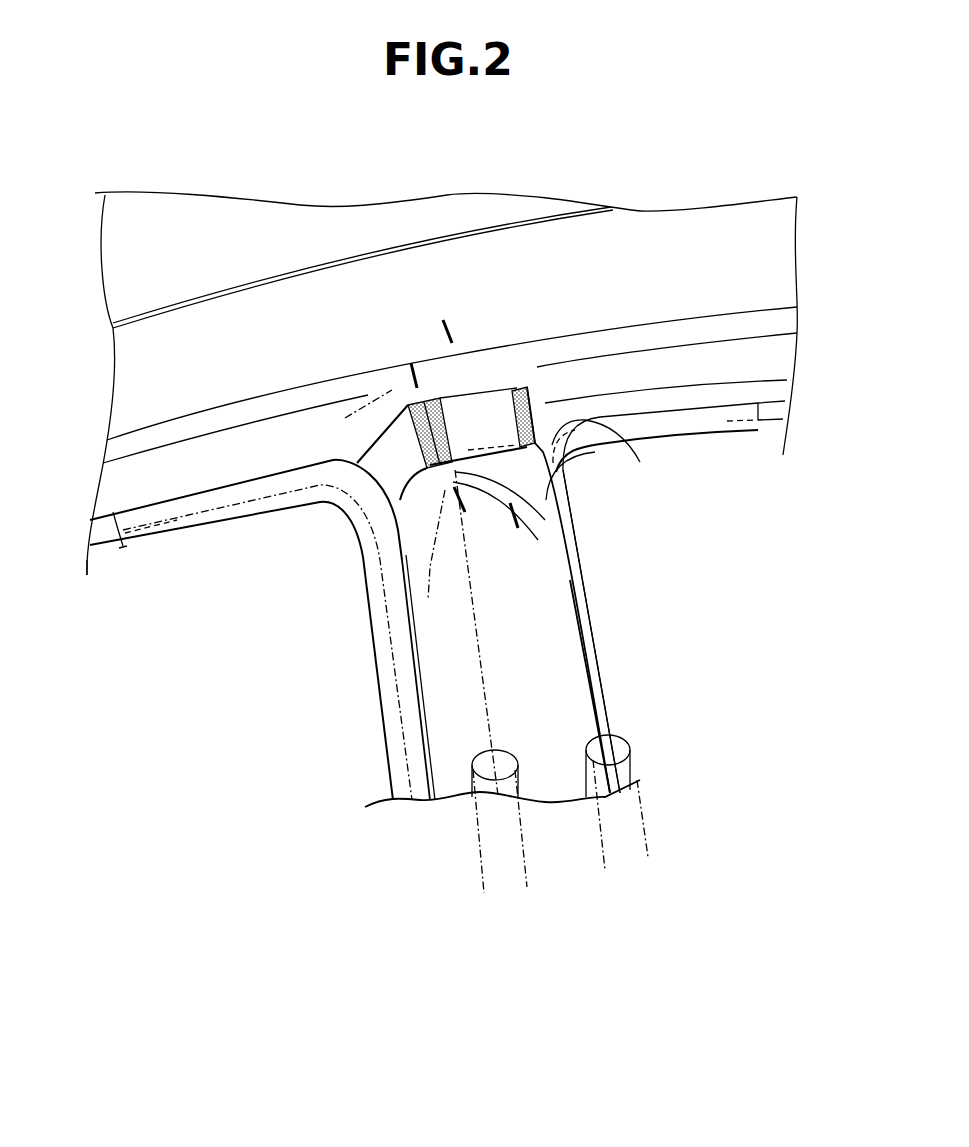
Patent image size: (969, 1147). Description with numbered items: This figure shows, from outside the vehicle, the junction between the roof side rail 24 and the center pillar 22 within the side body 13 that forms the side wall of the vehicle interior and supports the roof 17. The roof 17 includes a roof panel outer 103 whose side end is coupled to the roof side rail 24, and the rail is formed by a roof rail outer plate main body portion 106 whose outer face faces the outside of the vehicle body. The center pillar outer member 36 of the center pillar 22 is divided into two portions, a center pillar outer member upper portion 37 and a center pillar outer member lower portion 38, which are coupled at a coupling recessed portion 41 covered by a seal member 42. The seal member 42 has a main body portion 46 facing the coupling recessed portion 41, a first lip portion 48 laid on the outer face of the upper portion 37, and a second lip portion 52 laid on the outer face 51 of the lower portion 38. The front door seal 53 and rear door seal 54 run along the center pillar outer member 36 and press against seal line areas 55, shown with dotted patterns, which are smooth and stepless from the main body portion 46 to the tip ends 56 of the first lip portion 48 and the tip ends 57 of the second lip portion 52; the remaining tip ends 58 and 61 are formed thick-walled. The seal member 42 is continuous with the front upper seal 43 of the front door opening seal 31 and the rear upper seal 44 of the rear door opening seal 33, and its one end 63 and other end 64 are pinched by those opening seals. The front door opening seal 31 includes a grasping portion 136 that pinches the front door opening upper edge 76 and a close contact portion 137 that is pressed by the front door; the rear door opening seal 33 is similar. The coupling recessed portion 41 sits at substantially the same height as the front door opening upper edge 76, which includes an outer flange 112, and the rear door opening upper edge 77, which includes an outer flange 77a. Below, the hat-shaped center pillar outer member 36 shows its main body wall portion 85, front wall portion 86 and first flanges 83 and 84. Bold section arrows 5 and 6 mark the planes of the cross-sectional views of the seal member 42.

The side body 13 is at (216, 724).
The roof 17 is at (162, 192).
The center pillar 22 is at (459, 813).
The roof side rail 24 is at (705, 197).
The front door opening seal 31 is at (390, 763).
The rear door opening seal 33 is at (597, 630).
The center pillar outer member 36 is at (470, 605).
The center pillar outer member upper portion 37 is at (498, 388).
The center pillar outer member lower portion 38 is at (595, 682).
The coupling recessed portion 41 is at (477, 420).
The seal member 42 is at (475, 390).
The front upper seal 43 is at (233, 520).
The rear upper seal 44 is at (727, 433).
The main body portion 46 is at (553, 386).
The first lip portion 48 is at (458, 390).
The outer face 51 is at (550, 710).
The second lip portion 52 is at (584, 560).
The front door seal 53 is at (478, 850).
The rear door seal 54 is at (648, 843).
The seal line areas 55 is at (573, 500).
The tip ends 56 is at (410, 410).
The tip ends 57 is at (562, 464).
The remaining tip ends 58 is at (492, 390).
The remaining tip ends 61 is at (380, 442).
The one end 63 is at (347, 488).
The other end 64 is at (640, 462).
The front door opening upper edge 76 is at (110, 552).
The rear door opening upper edge 77 is at (773, 430).
The outer flange 77a is at (780, 408).
The first flange 83 is at (398, 787).
The first flange 84 is at (605, 721).
The main body wall portion 85 is at (557, 780).
The front wall portion 86 is at (423, 803).
The roof panel outer 103 is at (236, 227).
The roof rail outer plate main body portion 106 is at (770, 248).
The outer flange 112 is at (110, 530).
The grasping portion 136 is at (380, 681).
The close contact portion 137 is at (413, 701).
The section line V-V 5 is at (431, 378).
The section line VI-VI 6 is at (466, 334).